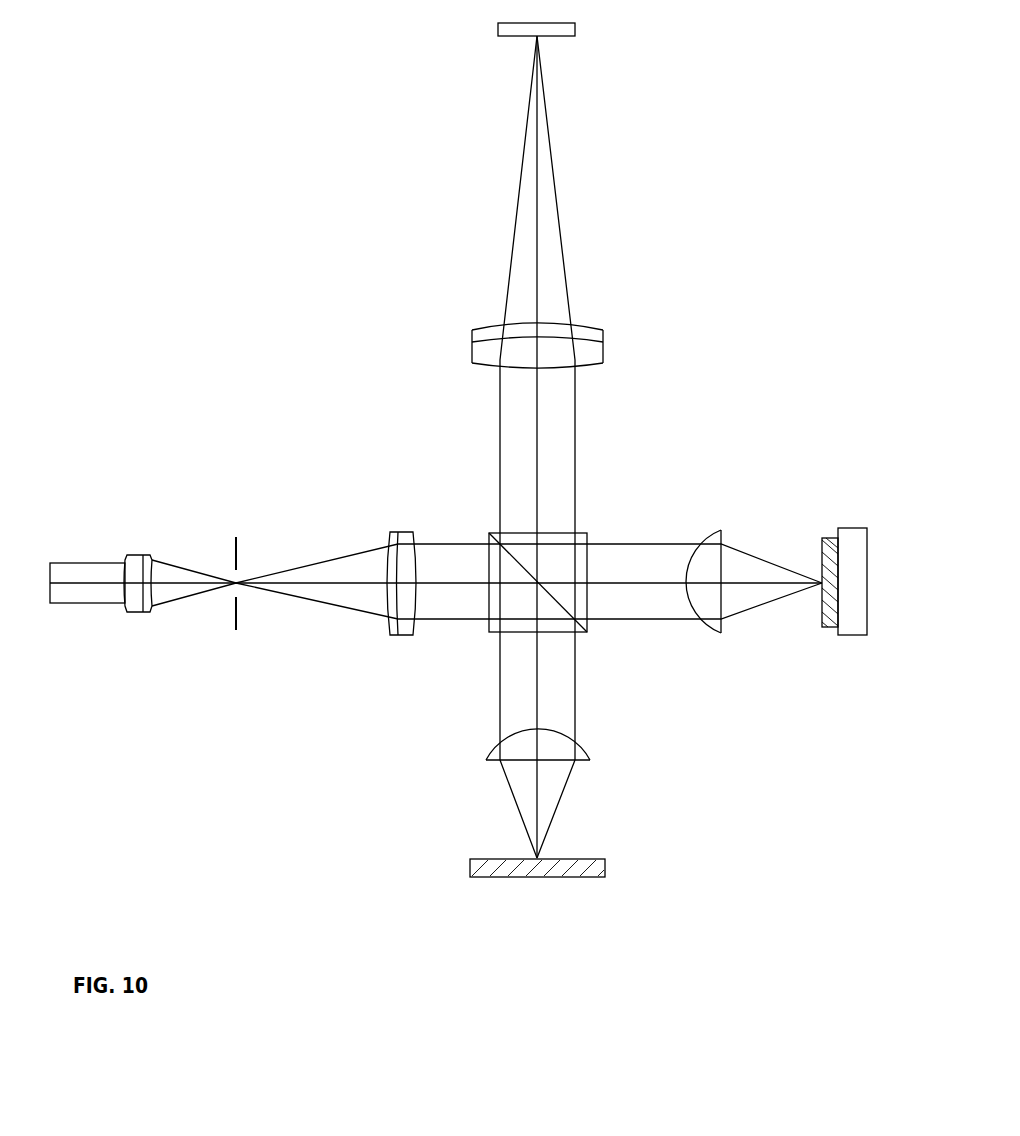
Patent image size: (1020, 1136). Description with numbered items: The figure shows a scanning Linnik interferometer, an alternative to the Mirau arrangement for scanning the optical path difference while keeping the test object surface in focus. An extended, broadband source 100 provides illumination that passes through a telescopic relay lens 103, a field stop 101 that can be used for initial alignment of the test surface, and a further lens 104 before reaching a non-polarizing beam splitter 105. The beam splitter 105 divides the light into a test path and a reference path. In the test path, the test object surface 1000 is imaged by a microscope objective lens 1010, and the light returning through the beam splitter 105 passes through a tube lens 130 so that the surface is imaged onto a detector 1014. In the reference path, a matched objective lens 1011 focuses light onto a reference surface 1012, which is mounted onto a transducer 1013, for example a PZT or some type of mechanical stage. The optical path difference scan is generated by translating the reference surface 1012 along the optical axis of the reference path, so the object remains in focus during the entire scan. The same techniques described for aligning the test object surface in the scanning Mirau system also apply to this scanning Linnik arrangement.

The broadband source 100 is at (52, 563).
The telescopic relay lens 103 is at (137, 555).
The field stop 101 is at (235, 532).
The collimator lens 104 is at (400, 532).
The non-polarizing beam splitter 105 is at (583, 530).
The tube lens 130 is at (596, 330).
The detector 1014 is at (487, 32).
The matched objective lens 1011 is at (715, 635).
The reference surface 1012 is at (820, 536).
The transducer 1013 is at (851, 523).
The microscope objective lens 1010 is at (485, 751).
The test object surface 1000 is at (463, 862).